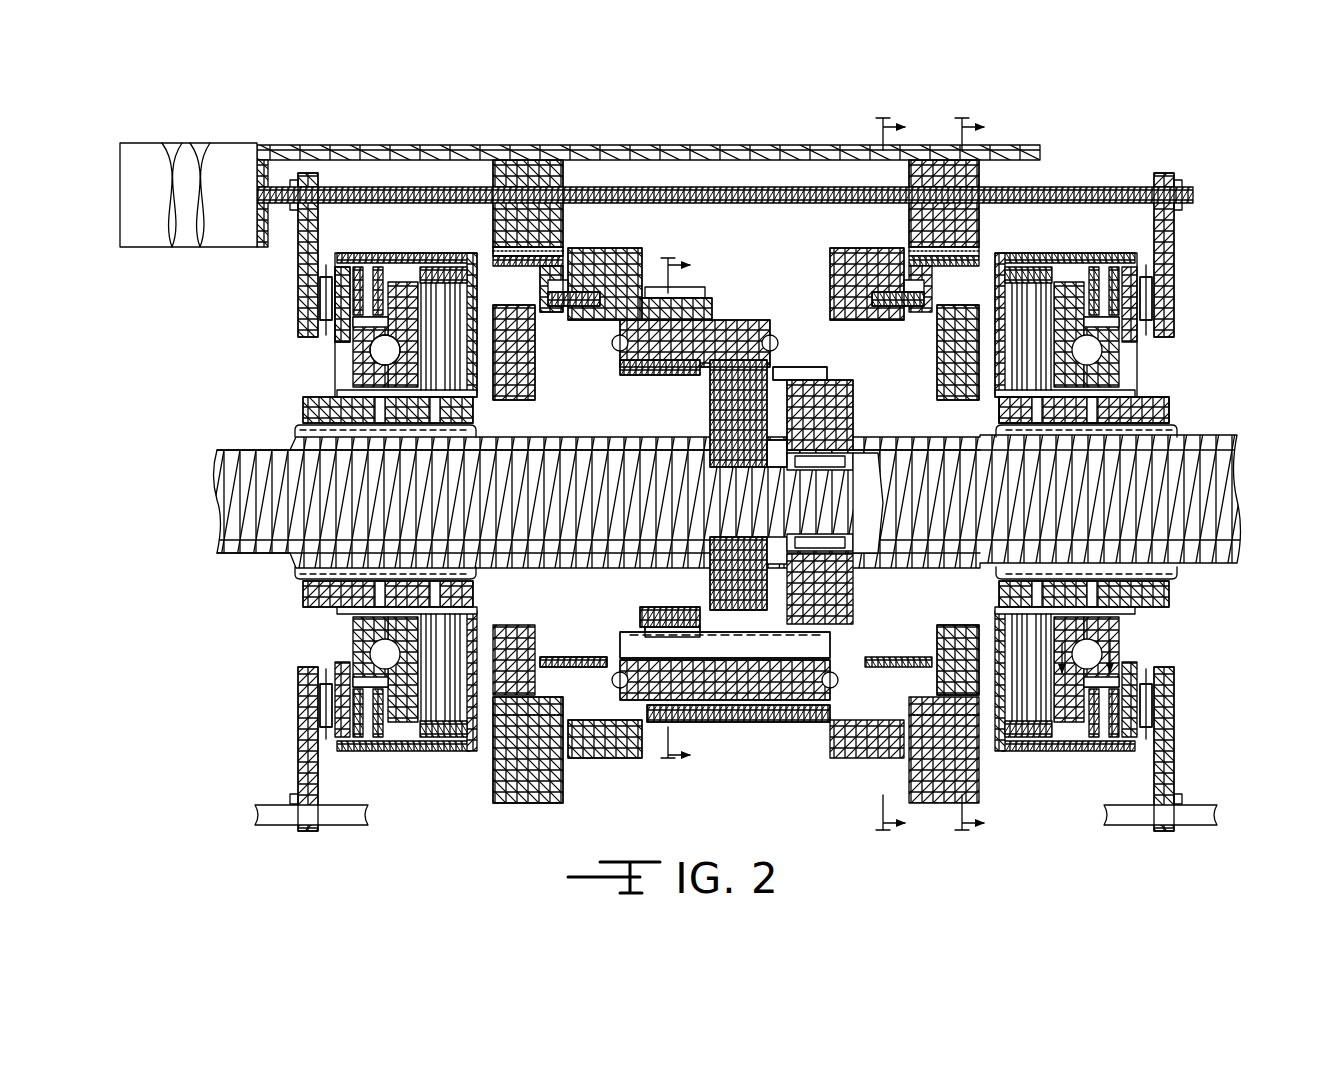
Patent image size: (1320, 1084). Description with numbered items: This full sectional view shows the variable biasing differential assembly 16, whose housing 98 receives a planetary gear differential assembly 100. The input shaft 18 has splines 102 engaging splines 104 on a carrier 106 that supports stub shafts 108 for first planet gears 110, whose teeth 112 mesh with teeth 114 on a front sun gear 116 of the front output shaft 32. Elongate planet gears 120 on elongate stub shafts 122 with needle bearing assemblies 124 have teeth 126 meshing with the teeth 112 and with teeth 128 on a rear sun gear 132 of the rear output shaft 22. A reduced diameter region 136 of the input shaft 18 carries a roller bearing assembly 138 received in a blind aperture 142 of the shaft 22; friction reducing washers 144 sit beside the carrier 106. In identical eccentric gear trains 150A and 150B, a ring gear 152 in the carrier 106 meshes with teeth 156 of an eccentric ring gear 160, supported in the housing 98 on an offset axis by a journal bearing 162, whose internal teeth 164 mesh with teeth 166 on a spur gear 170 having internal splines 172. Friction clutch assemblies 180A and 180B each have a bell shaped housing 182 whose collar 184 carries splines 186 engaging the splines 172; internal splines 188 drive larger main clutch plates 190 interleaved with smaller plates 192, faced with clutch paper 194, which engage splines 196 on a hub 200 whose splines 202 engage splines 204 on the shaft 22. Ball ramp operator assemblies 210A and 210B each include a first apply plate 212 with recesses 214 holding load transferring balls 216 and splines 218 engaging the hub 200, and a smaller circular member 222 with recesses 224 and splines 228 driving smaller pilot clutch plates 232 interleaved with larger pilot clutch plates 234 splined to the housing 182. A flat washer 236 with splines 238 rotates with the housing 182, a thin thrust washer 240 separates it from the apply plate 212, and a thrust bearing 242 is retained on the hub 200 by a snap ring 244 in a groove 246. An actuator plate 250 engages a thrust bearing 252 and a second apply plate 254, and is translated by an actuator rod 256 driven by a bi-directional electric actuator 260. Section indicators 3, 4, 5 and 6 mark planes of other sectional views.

The variable biasing differential assembly 16 is at (1118, 158).
The input shaft 18 is at (230, 467).
The primary or rear output shaft 22 is at (1185, 515).
The secondary or front output shaft 32 is at (257, 563).
The housing 98 is at (818, 150).
The planetary gear differential assembly 100 is at (660, 135).
The male or external splines or gear teeth 102 is at (720, 470).
The internal or female splines or gear teeth 104 is at (740, 447).
The carrier 106 is at (771, 345).
The stub shafts 108 is at (732, 333).
The first plurality of planet gears 110 is at (657, 290).
The gear teeth 112 is at (663, 387).
The gear teeth 114 is at (650, 613).
The first or front sun gear 116 is at (653, 590).
The second plurality of elongate planet gears 120 is at (790, 717).
The elongate stub shafts 122 is at (830, 680).
The needle bearing assemblies 124 is at (753, 707).
The gear teeth 126 is at (730, 727).
The gear teeth 128 is at (805, 375).
The second or rear sun gear 132 is at (808, 405).
The reduced diameter region 136 is at (850, 487).
The roller bearing assembly 138 is at (820, 460).
The counter bore or blind aperture 142 is at (863, 520).
The flat friction reducing washers 144 is at (700, 536).
The eccentric gear train 150A is at (1085, 115).
The eccentric gear train 150B is at (505, 137).
The ring gear 152 is at (592, 290).
The male or external gear teeth 156 is at (590, 667).
The eccentric ring gear 160 is at (548, 298).
The journal bearing 162 is at (527, 247).
The internal or female gear teeth 164 is at (548, 266).
The male or external gear teeth 166 is at (527, 312).
The spur gear 170 is at (615, 373).
The internal or female splines or gear teeth 172 is at (527, 398).
The rear friction clutch assembly 180A is at (1142, 160).
The front friction clutch assembly 180B is at (350, 135).
The bell shaped housing 182 is at (1053, 262).
The cylindrical collar 184 is at (977, 417).
The male splines or gear teeth 186 is at (540, 418).
The internal axially extending female splines 188 is at (1075, 273).
The first plurality of larger diameter main friction clutch plates 190 is at (1008, 280).
The second plurality of smaller diameter main clutch plates 192 is at (1000, 350).
The clutch plate 194 is at (1090, 327).
The male or external splines 196 is at (1140, 393).
The circular collar or hub 200 is at (1153, 413).
The female or internal splines or gear teeth 202 is at (1180, 440).
The male or external splines or gear teeth 204 is at (1127, 427).
The rear ball ramp operator assembly 210A is at (1192, 233).
The front ball ramp operator assembly 210B is at (302, 362).
The first or primary circular apply plate 212 is at (1063, 290).
The arcuate recesses 214 is at (985, 345).
The load transferring balls 216 is at (1113, 353).
The internal or female splines or gear teeth 218 is at (1073, 393).
The smaller diameter circular member 222 is at (1130, 362).
The arcuate recesses 224 is at (1088, 343).
The external or male splines 228 is at (368, 325).
The first plurality of smaller diameter pilot clutch plates 232 is at (350, 300).
The second plurality of larger diameter pilot clutch plates 234 is at (345, 262).
The circular plate or thick flat washer 236 is at (357, 665).
The male or external splines 238 is at (385, 745).
The thin thrust washer 240 is at (1090, 715).
The thrust bearing 242 is at (1140, 630).
The snap ring 244 is at (1150, 625).
The circumferential channel or groove 246 is at (1170, 580).
The axially moving actuator plate 250 is at (318, 228).
The thrust bearing 252 is at (1150, 290).
The second circular apply plate 254 is at (1147, 710).
The actuator rod 256 is at (750, 185).
The bi-directional electric actuator 260 is at (235, 160).
The section line 3 is at (690, 510).
The section line 4 is at (901, 475).
The section line 5 is at (981, 475).
The section line 6 is at (1097, 670).